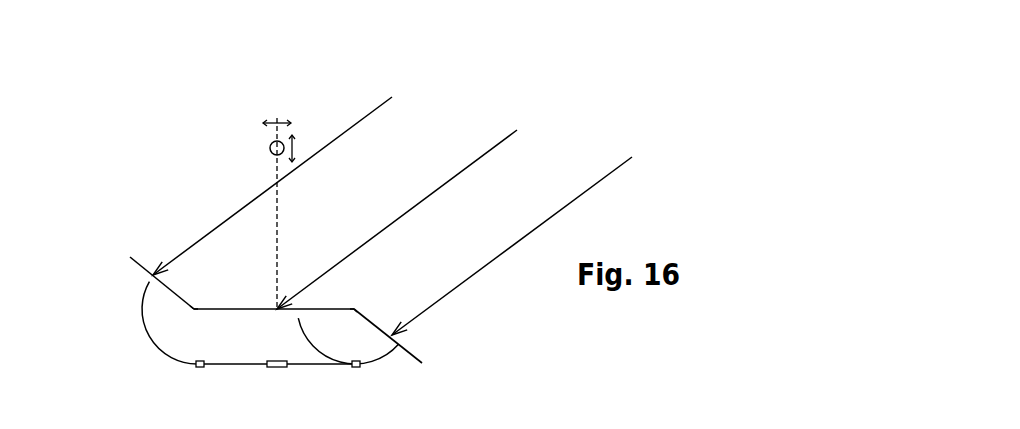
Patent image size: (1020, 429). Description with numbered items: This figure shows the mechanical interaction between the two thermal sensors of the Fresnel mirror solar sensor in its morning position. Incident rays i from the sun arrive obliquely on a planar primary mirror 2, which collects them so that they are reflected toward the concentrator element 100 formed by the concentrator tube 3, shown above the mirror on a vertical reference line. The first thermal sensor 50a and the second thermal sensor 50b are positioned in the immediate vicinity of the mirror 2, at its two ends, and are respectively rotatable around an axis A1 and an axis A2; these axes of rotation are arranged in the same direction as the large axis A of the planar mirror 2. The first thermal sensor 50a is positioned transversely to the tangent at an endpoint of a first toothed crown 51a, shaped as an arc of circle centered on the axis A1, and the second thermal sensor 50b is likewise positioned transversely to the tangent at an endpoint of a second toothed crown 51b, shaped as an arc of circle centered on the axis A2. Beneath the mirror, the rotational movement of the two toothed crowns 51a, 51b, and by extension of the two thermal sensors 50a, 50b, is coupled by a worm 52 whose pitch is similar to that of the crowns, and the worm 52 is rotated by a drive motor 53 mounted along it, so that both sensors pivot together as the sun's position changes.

The concentrator element 100 is at (270, 148).
The concentrator tube 3 is at (279, 141).
The incident rays i is at (363, 118).
The large axes of the planar mirrors A is at (274, 307).
The axis of rotation of the first thermal sensor A1 is at (197, 307).
The axis of rotation of the second thermal sensor A2 is at (354, 308).
The primary mirrors 2 is at (255, 312).
The first thermal sensor 50a is at (150, 270).
The second thermal sensor 50b is at (407, 350).
The first toothed crown 51a is at (138, 318).
The second toothed crown 51b is at (382, 358).
The worm 52 is at (230, 368).
The drive motor 53 is at (276, 368).